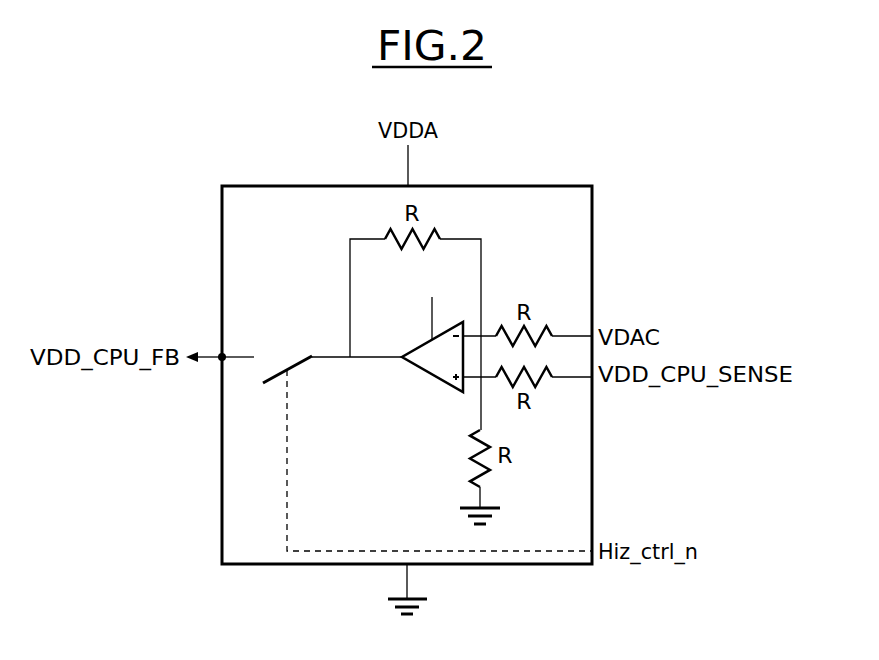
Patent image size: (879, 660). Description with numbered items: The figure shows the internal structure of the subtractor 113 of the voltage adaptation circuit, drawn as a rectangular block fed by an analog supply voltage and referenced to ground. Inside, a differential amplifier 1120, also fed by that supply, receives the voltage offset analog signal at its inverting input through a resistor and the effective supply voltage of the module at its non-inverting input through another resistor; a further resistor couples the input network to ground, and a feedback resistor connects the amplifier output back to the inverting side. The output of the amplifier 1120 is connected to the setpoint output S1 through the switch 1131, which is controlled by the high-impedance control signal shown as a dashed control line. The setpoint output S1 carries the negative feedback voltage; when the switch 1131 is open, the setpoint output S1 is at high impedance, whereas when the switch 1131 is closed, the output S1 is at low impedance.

The subtractor 113 is at (538, 186).
The differential amplifier 1120 is at (432, 380).
The switch 1131 is at (296, 358).
The setpoint output S1 is at (222, 357).